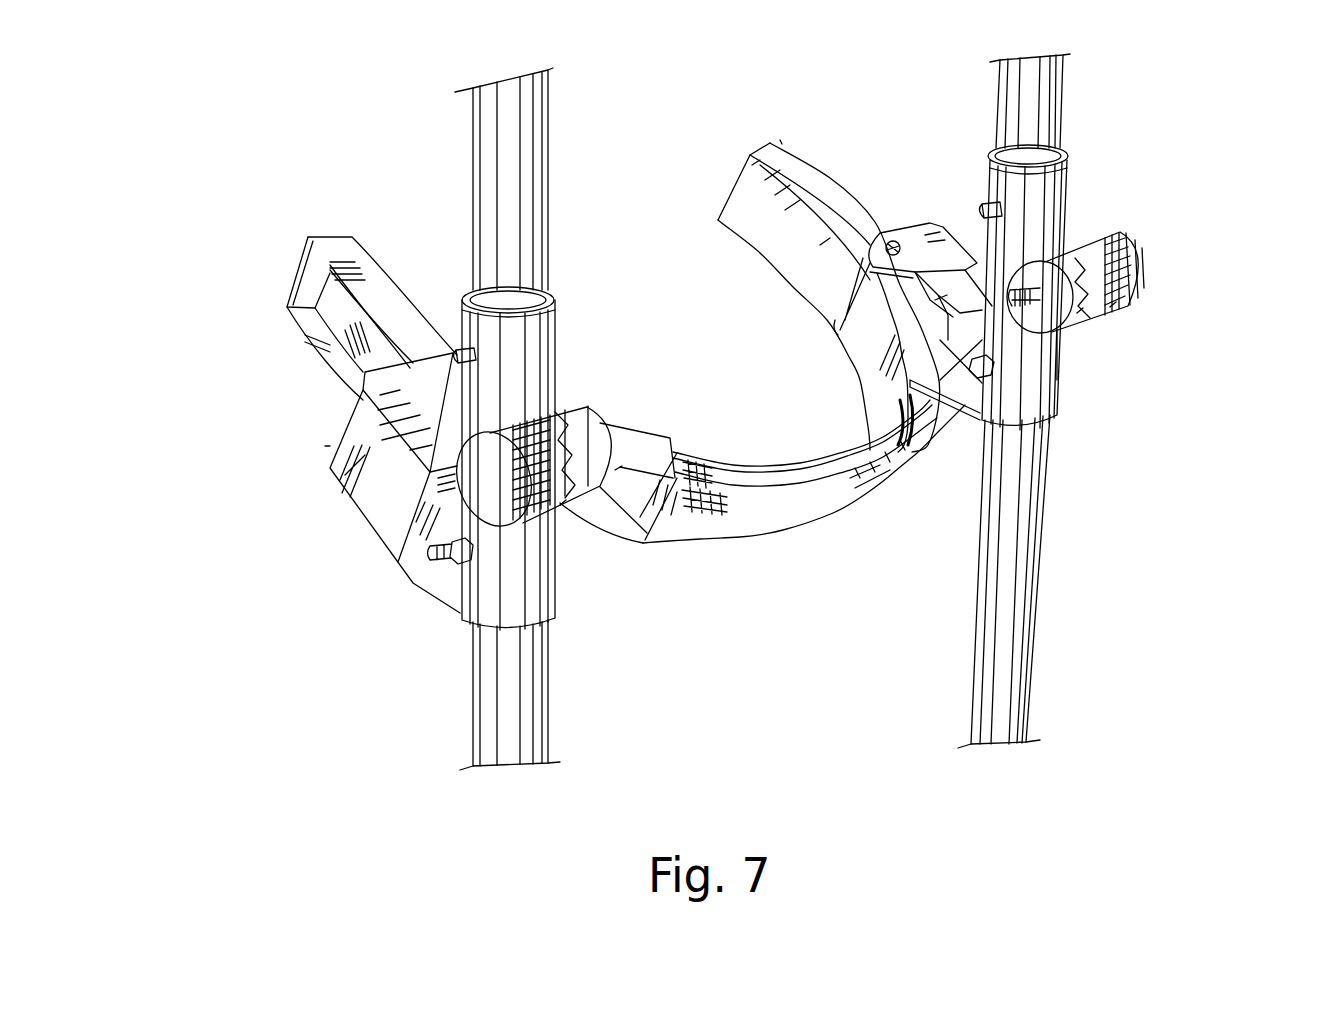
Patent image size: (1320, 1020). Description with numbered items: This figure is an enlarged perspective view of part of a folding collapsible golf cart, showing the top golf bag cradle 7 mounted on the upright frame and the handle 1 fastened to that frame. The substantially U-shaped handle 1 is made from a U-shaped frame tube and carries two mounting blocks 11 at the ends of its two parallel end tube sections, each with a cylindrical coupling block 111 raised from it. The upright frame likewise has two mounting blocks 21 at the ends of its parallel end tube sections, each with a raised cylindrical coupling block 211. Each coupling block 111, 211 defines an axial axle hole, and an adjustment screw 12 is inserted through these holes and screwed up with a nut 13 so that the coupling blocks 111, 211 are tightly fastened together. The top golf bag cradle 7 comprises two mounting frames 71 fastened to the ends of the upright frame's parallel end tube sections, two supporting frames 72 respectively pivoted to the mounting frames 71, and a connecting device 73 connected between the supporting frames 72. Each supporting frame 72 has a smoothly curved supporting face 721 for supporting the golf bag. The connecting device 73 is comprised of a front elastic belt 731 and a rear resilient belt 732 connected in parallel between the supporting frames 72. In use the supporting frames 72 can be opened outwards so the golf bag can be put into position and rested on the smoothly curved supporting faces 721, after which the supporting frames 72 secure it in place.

The handle 1 is at (466, 150).
The top golf bag cradle 7 is at (322, 446).
The mounting block 11 is at (555, 343).
The adjustment screw 12 is at (540, 520).
The nut 13 is at (1057, 330).
The mounting block 21 is at (960, 225).
The mounting frame 71 is at (420, 370).
The supporting frame 72 is at (322, 237).
The smoothly curved supporting face 721 is at (373, 272).
The connecting device 73 is at (762, 580).
The front elastic belt 731 is at (727, 465).
The rear resilient belt 732 is at (817, 487).
The cylindrical coupling block 111 is at (560, 505).
The cylindrical coupling block 211 is at (615, 470).